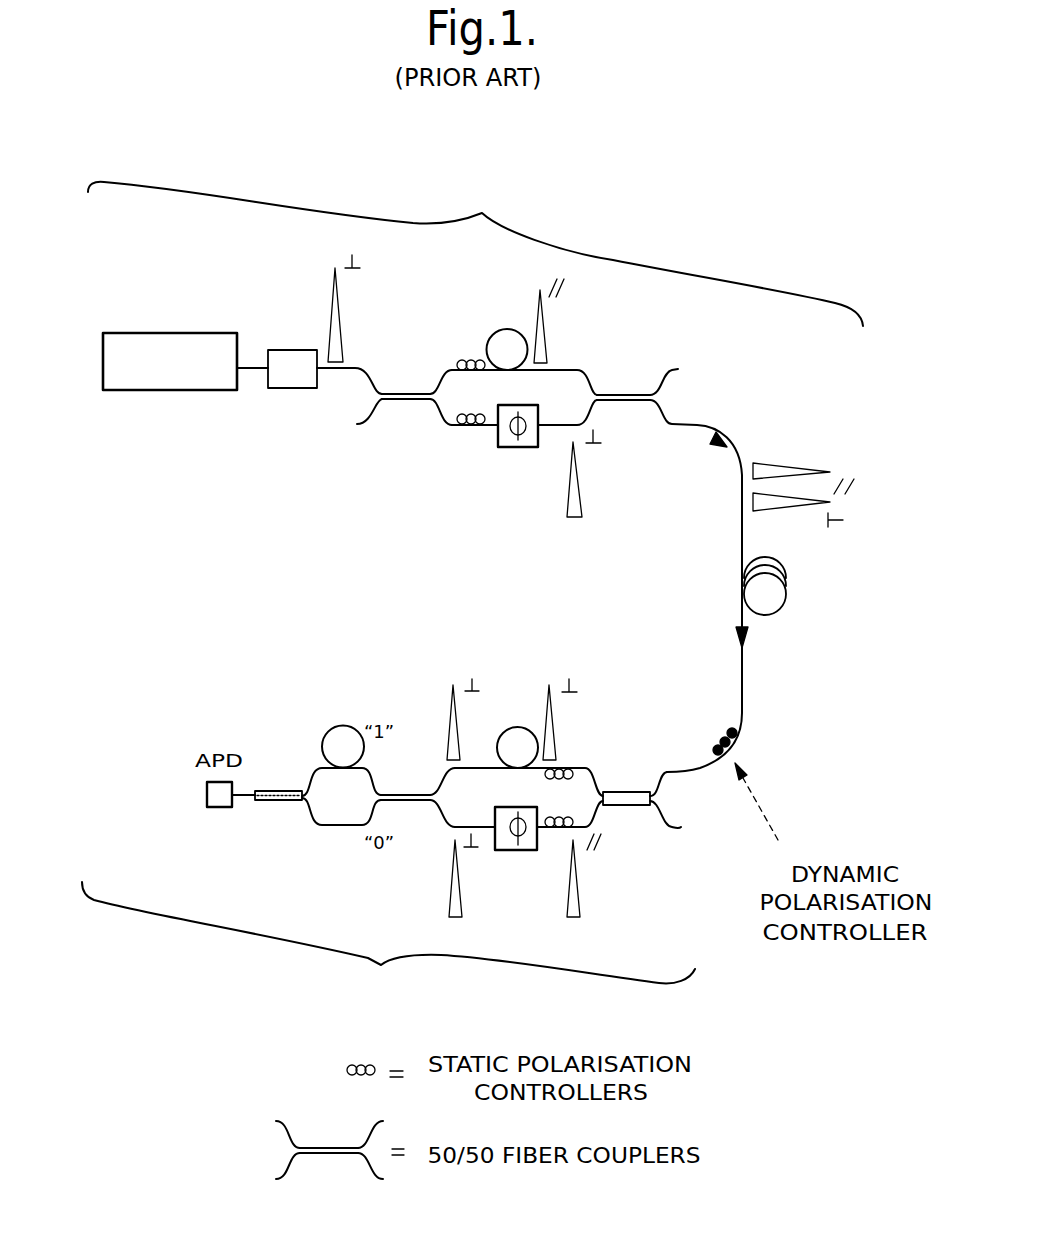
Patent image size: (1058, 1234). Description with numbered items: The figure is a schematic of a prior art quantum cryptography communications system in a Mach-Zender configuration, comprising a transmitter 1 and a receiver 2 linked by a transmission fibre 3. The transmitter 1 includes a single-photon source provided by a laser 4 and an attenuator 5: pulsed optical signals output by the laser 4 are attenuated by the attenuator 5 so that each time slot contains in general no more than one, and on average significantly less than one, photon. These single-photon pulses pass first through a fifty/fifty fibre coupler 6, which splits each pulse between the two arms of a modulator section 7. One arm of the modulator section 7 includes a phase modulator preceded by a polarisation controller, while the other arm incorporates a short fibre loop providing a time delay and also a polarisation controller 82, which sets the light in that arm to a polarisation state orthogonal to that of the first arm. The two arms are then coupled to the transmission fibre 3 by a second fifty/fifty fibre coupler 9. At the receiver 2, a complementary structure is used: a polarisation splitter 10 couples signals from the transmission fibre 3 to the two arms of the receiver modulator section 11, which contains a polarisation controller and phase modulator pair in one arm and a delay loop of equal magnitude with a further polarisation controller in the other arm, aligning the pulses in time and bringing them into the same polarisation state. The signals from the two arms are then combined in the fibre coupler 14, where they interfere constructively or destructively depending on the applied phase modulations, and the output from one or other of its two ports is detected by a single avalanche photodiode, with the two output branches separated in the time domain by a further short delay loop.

The transmitter 1 is at (475, 254).
The receiver 2 is at (388, 938).
The transmission fibre 3 is at (697, 424).
The laser 4 is at (152, 333).
The attenuator 5 is at (290, 350).
The 50/50 fibre coupler 6 is at (407, 394).
The modulator section 7 is at (448, 455).
The polarisation controller 82 is at (463, 360).
The second 50/50 fibre coupler 9 is at (616, 394).
The polarisation splitter 10 is at (610, 792).
The receiver modulator section 11 is at (513, 705).
The fibre coupler 14 is at (282, 801).